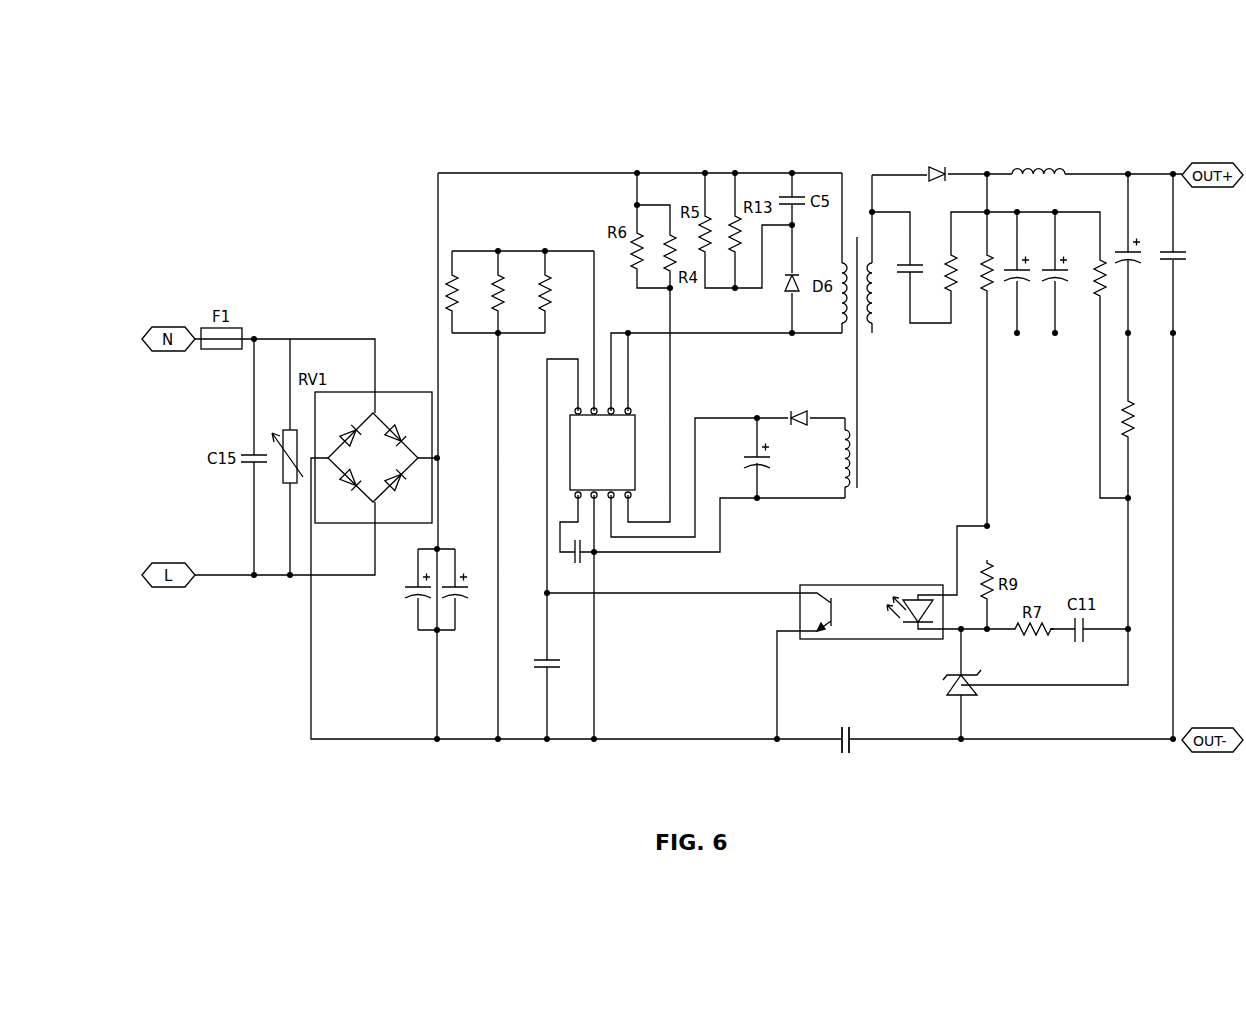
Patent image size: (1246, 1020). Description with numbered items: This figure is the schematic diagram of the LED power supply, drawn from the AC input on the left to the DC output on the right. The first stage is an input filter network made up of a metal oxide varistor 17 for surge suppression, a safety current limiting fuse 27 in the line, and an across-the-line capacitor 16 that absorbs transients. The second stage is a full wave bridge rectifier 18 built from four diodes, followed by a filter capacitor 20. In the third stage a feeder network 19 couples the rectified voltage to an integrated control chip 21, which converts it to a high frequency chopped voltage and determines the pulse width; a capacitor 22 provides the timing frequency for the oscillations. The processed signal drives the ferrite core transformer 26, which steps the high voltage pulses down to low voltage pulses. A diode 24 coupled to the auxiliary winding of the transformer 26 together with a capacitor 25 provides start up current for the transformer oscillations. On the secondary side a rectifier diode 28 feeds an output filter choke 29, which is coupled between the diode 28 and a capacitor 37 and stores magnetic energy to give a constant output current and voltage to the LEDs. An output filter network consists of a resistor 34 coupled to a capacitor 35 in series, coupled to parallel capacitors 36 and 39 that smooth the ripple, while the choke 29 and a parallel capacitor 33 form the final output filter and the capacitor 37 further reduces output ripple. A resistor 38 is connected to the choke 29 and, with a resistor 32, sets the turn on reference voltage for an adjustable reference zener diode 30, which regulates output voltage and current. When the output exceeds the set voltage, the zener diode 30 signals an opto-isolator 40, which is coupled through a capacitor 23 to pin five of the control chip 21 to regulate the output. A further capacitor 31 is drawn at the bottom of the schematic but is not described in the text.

The across-the-line capacitor 16 is at (246, 466).
The metal oxide varistor 17 is at (292, 430).
The bridge rectifier 18 is at (397, 392).
The resistors R1 R2 R3 19 is at (498, 251).
The filter capacitor 20 is at (440, 549).
The integrated control chip 21 is at (588, 457).
The capacitor 22 is at (588, 558).
The capacitor 23 is at (553, 670).
The diode 24 is at (800, 410).
The capacitor 25 is at (765, 466).
The transformer 26 is at (855, 237).
The safety current limiting fuse 27 is at (232, 327).
The diode 28 is at (935, 163).
The inductor 29 is at (1063, 172).
The adjustable reference zener diode 30 is at (968, 695).
The capacitor C1 31 is at (852, 750).
The resistor 32 is at (1122, 420).
The parallel capacitor 33 is at (1181, 248).
The resistor 34 is at (961, 272).
The capacitor 35 is at (918, 265).
The capacitor 36 is at (1008, 283).
The capacitor 37 is at (1139, 250).
The resistor 38 is at (1099, 255).
The capacitor 39 is at (1048, 283).
The opto-isolator 40 is at (905, 585).